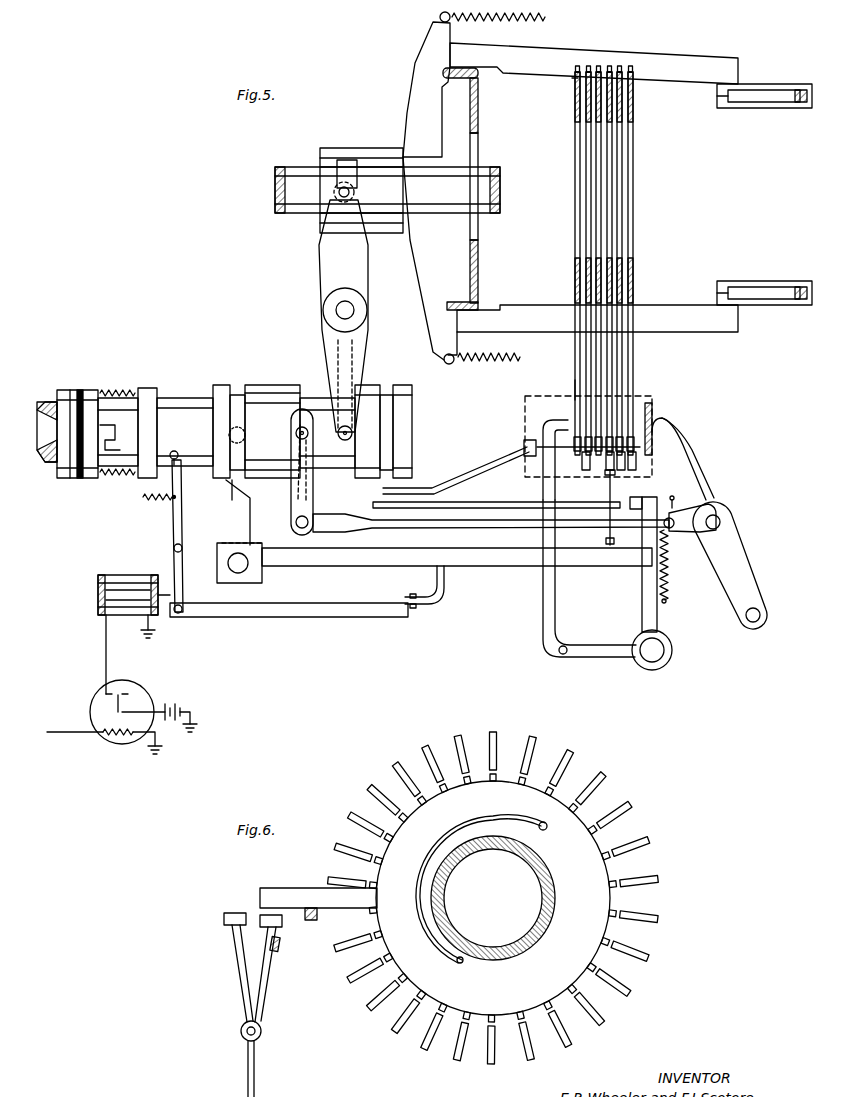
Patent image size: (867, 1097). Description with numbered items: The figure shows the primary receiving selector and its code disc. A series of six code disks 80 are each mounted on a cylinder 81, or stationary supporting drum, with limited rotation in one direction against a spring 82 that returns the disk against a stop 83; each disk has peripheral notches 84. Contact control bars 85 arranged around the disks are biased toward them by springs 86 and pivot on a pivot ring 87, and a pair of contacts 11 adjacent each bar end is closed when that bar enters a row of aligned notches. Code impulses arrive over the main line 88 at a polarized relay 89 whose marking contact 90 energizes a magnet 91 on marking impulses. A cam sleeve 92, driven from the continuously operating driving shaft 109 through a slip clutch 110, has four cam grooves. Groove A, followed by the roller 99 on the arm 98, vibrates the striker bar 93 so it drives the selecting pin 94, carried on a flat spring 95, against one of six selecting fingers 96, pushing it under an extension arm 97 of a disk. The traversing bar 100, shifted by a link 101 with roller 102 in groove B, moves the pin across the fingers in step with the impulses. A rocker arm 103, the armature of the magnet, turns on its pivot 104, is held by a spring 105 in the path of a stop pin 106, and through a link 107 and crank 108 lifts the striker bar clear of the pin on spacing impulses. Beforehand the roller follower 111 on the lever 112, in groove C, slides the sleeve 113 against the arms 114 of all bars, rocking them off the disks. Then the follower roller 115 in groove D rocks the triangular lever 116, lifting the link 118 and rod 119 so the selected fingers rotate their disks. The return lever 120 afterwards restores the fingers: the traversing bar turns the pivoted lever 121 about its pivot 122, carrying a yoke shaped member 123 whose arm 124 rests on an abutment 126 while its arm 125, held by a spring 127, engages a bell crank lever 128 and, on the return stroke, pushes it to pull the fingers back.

In FIG. 5, the contacts 11 is at (756, 108).
In FIG. 5, the code disks 80 is at (636, 116).
In FIG. 6, the code disks 80 is at (583, 818).
In FIG. 6, the cylinder 81 is at (556, 896).
In FIG. 6, the spring 82 is at (497, 818).
In FIG. 6, the stop 83 is at (310, 921).
In FIG. 5, the notches 84 is at (575, 78).
In FIG. 6, the notches 84 is at (378, 910).
In FIG. 5, the contact control bars 85 is at (672, 62).
In FIG. 6, the contact control bars 85 is at (527, 770).
In FIG. 5, the springs 86 is at (510, 197).
In FIG. 5, the pivot ring 87 is at (484, 114).
In FIG. 5, the main line 88 is at (72, 733).
In FIG. 5, the polarized relay 89 is at (122, 738).
In FIG. 5, the marking contact 90 is at (105, 661).
In FIG. 5, the magnet 91 is at (125, 580).
In FIG. 5, the cam sleeve 92 is at (255, 396).
In FIG. 5, the striker bar 93 is at (503, 567).
In FIG. 5, the selecting pin 94 is at (610, 534).
In FIG. 5, the flat spring 95 is at (508, 498).
In FIG. 5, the selecting fingers 96 is at (640, 460).
In FIG. 6, the selecting fingers 96 is at (236, 962).
In FIG. 5, the extension arms 97 is at (636, 385).
In FIG. 6, the extension arms 97 is at (302, 893).
In FIG. 5, the arm 98 is at (230, 503).
In FIG. 5, the roller 99 is at (229, 435).
In FIG. 5, the traversing bar 100 is at (504, 528).
In FIG. 5, the link 101 is at (292, 503).
In FIG. 5, the roller 102 is at (296, 434).
In FIG. 5, the rocker arm 103 is at (173, 547).
In FIG. 5, the pivot 104 is at (195, 551).
In FIG. 5, the spring 105 is at (142, 499).
In FIG. 5, the stop pin 106 is at (170, 462).
In FIG. 5, the link 107 is at (314, 617).
In FIG. 5, the crank 108 is at (440, 596).
In FIG. 5, the driving shaft 109 is at (50, 412).
In FIG. 5, the slip clutch 110 is at (86, 392).
In FIG. 5, the roller follower 111 is at (353, 433).
In FIG. 5, the lever 112 is at (322, 275).
In FIG. 5, the sleeve 113 is at (363, 158).
In FIG. 5, the arms 114 is at (410, 86).
In FIG. 5, the follower roller 115 is at (396, 476).
In FIG. 5, the triangular lever 116 is at (462, 478).
In FIG. 6, the link 118 is at (255, 1080).
In FIG. 6, the rod 119 is at (261, 1032).
In FIG. 5, the return lever 120 is at (552, 418).
In FIG. 5, the pivoted lever 121 is at (740, 580).
In FIG. 5, the pivot 122 is at (752, 623).
In FIG. 5, the yoke shaped member 123 is at (682, 510).
In FIG. 5, the arm 124 is at (680, 434).
In FIG. 5, the arm 125 is at (676, 497).
In FIG. 5, the abutment 126 is at (655, 415).
In FIG. 5, the spring 127 is at (670, 562).
In FIG. 5, the bell crank lever 128 is at (663, 628).